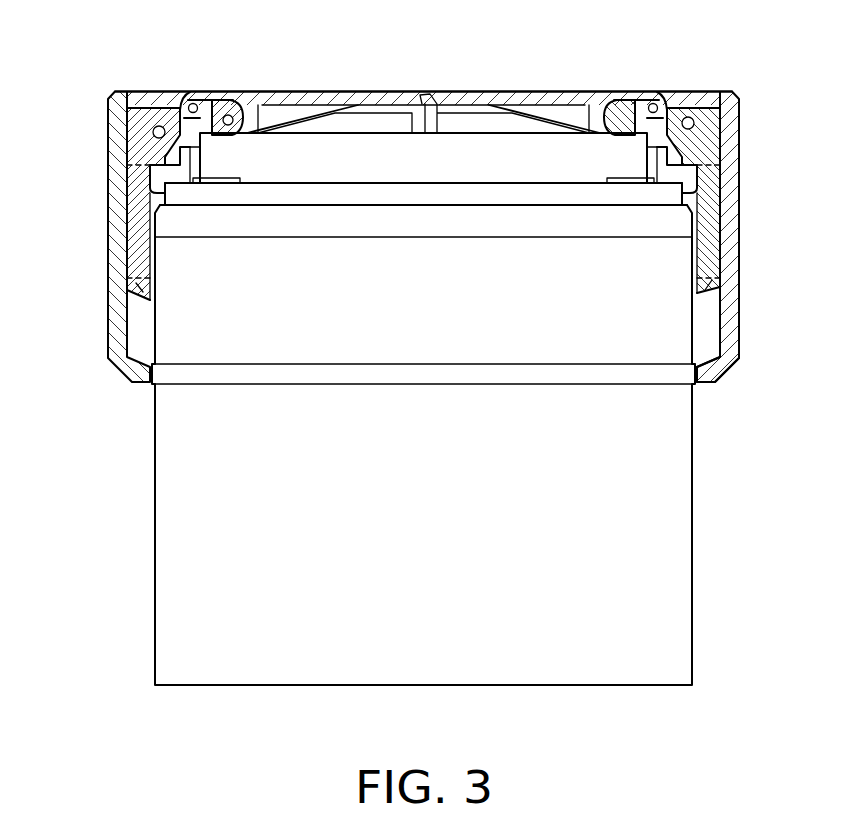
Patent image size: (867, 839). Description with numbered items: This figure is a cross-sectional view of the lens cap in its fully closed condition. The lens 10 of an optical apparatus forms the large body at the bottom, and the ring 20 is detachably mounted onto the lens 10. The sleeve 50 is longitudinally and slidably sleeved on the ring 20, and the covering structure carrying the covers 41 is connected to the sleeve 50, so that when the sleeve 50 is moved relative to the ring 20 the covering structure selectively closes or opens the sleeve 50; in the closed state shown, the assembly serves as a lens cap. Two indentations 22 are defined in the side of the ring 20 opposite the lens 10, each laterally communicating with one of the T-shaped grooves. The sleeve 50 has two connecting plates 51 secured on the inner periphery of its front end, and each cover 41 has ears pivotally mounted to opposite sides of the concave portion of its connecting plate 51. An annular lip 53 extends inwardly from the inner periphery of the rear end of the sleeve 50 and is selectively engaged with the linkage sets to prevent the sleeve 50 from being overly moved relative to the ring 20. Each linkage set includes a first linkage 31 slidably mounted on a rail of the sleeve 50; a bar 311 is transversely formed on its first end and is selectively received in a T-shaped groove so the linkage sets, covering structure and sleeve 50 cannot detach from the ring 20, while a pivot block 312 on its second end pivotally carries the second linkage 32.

The lens 10 is at (663, 572).
The ring 20 is at (668, 172).
The indentation 22 is at (180, 155).
The first linkage 31 is at (710, 212).
The bar 311 is at (735, 300).
The pivot block 312 is at (677, 108).
The second linkage 32 is at (641, 104).
The cover 41 is at (468, 100).
The sleeve 50 is at (122, 232).
The connecting plate 51 is at (152, 100).
The annular lip 53 is at (715, 372).